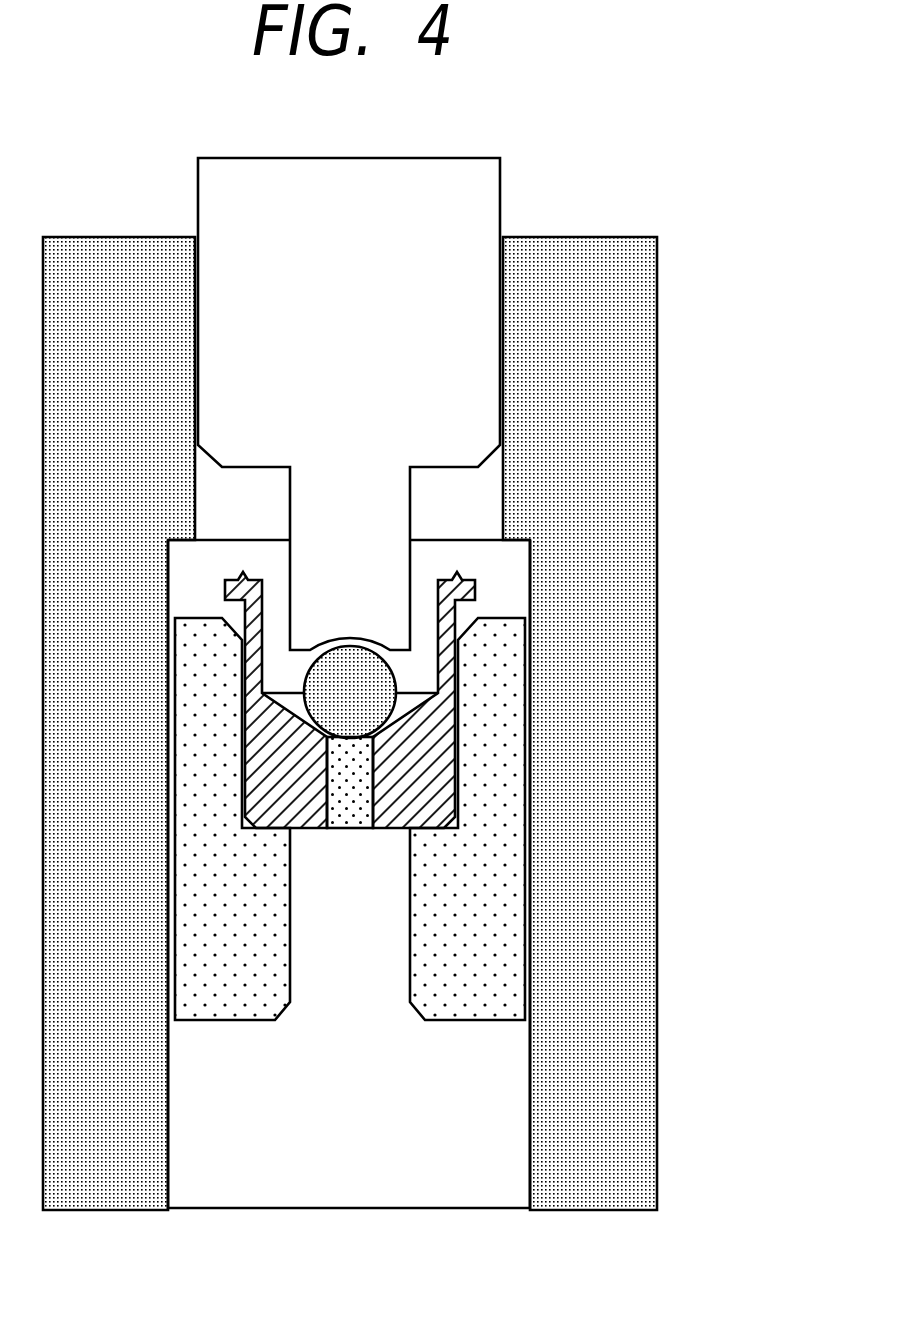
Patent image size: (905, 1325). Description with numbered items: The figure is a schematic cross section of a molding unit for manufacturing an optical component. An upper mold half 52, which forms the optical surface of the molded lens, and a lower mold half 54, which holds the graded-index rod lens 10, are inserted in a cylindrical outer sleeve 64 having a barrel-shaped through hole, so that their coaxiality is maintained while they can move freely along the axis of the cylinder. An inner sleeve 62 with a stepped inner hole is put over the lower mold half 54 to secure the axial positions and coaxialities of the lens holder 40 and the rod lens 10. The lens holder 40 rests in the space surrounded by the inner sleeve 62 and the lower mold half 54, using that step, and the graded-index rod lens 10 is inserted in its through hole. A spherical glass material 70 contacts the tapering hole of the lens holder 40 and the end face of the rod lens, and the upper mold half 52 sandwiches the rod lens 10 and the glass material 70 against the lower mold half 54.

The graded-index rod lens 10 is at (350, 778).
The lens holder 40 is at (425, 725).
The upper mold half 52 is at (450, 392).
The lower mold half 54 is at (473, 1120).
The inner sleeve 62 is at (475, 992).
The outer sleeve 64 is at (617, 1153).
The spherical glass material 70 is at (360, 680).